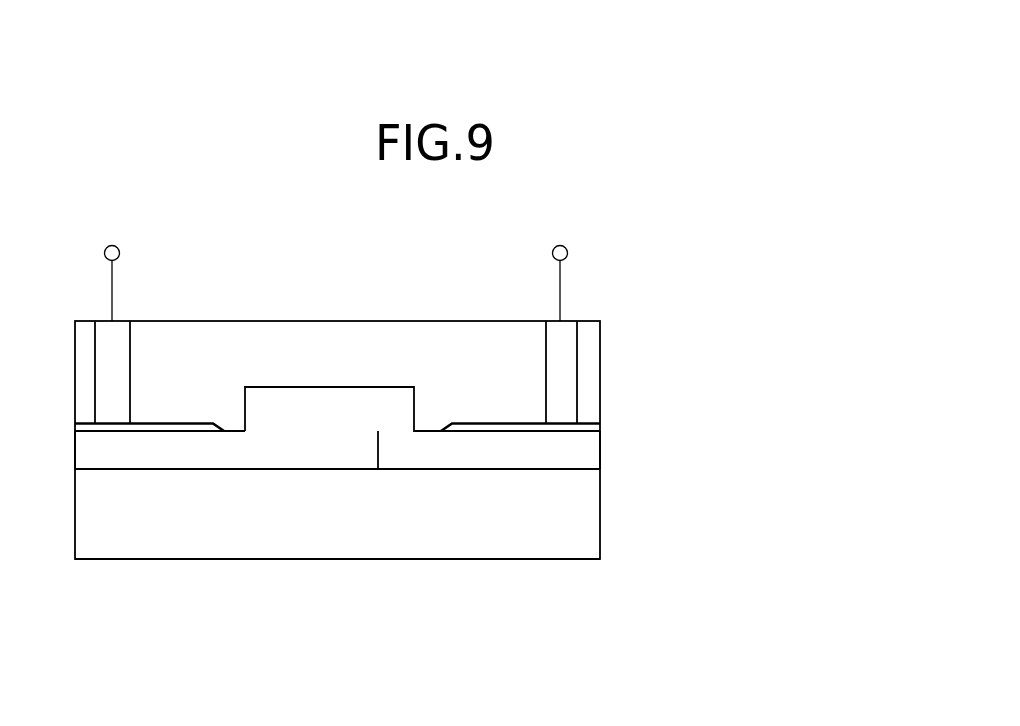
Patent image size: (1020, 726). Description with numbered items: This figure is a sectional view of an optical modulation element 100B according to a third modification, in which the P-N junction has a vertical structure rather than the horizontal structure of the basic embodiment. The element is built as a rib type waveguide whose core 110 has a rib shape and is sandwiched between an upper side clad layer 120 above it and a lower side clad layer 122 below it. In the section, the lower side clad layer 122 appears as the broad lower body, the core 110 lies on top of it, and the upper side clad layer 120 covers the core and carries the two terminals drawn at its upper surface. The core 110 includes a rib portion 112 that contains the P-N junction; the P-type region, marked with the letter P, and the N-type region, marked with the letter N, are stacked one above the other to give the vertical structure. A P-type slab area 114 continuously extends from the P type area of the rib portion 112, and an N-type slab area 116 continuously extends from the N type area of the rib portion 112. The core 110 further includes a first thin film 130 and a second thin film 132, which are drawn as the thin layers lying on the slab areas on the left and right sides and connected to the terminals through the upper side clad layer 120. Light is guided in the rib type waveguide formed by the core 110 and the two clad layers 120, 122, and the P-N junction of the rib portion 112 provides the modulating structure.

The optical modulation element 100B is at (798, 207).
The core 110 is at (532, 648).
The rib portion 112 is at (357, 457).
The P-type slab area 114 is at (203, 453).
The N-type slab area 116 is at (422, 409).
The upper side clad layer 120 is at (255, 355).
The lower side clad layer 122 is at (568, 518).
The first thin film 130 is at (152, 427).
The second thin film 132 is at (500, 427).